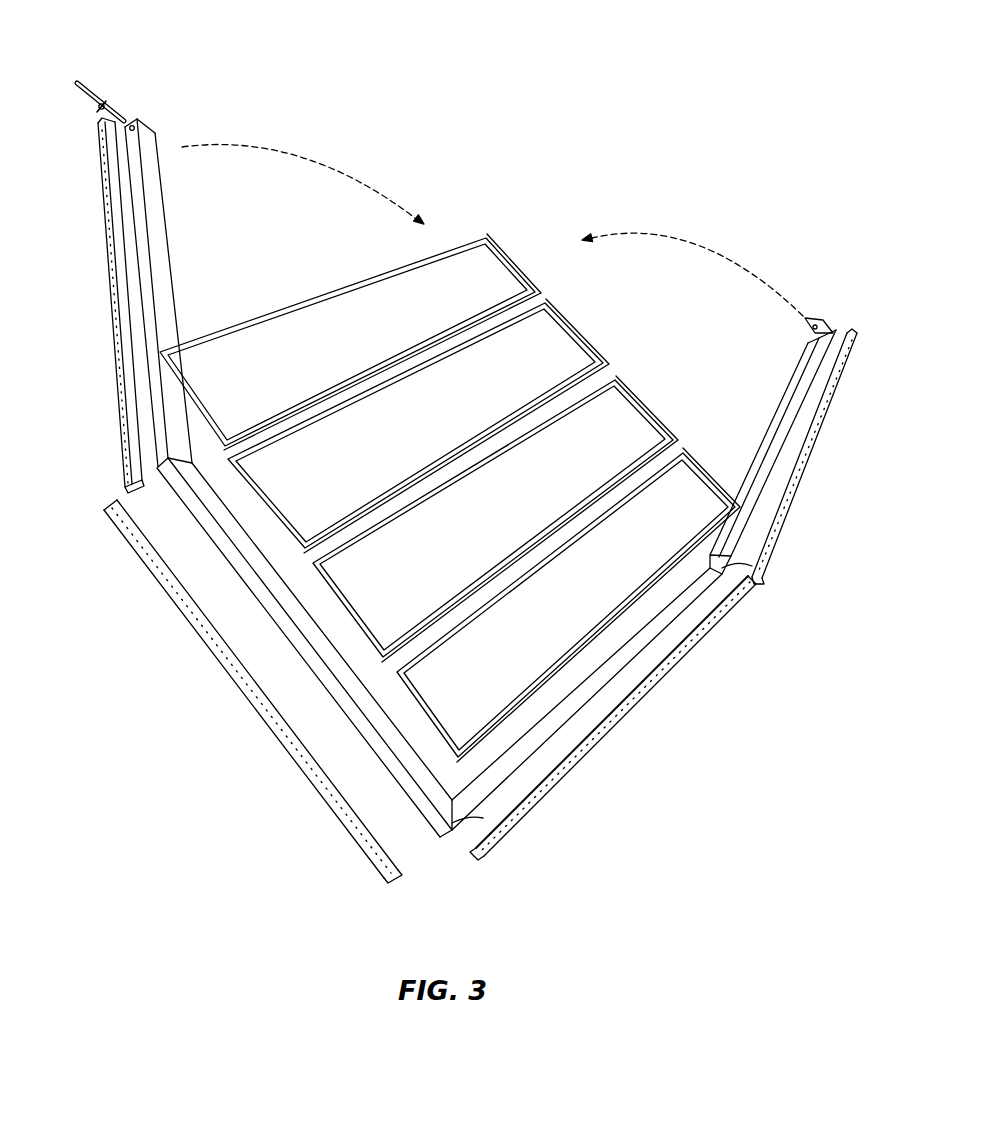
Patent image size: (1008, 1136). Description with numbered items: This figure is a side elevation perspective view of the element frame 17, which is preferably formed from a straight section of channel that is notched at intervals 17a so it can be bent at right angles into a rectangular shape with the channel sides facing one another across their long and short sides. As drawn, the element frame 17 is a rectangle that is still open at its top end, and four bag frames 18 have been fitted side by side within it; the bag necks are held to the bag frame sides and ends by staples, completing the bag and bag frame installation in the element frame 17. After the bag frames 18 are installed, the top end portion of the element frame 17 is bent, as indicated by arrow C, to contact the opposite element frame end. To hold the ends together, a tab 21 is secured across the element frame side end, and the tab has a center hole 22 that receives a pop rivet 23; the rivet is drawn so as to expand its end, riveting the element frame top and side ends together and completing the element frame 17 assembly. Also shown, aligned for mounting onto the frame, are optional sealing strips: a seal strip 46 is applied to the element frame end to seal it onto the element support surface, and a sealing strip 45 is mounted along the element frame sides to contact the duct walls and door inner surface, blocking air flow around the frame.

The element frame 17 is at (180, 266).
The notched intervals 17a is at (183, 468).
The bag frame 18 is at (514, 267).
The tab 21 is at (833, 318).
The center hole 22 is at (807, 318).
The pop rivet 23 is at (115, 108).
The sealing strip 45 is at (812, 457).
The seal strip 46 is at (110, 282).
The arrow C is at (298, 162).